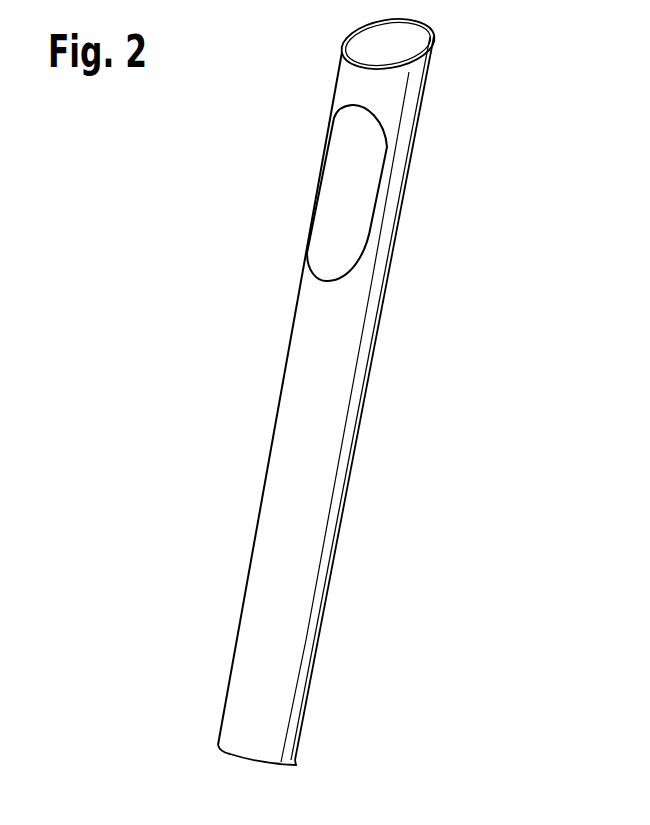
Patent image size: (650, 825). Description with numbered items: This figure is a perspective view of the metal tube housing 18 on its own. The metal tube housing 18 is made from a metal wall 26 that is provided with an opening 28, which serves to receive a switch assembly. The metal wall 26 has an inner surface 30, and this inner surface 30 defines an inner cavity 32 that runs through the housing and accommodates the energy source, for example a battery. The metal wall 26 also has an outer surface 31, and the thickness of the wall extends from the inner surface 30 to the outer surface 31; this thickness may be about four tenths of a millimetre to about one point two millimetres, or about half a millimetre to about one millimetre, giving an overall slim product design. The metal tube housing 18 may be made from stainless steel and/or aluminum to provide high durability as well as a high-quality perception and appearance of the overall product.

The metal tube housing 18 is at (315, 442).
The metal wall 26 is at (288, 562).
The opening 28 is at (330, 222).
The inner surface 30 is at (398, 45).
The outer surface 31 is at (263, 695).
The inner cavity 32 is at (367, 48).